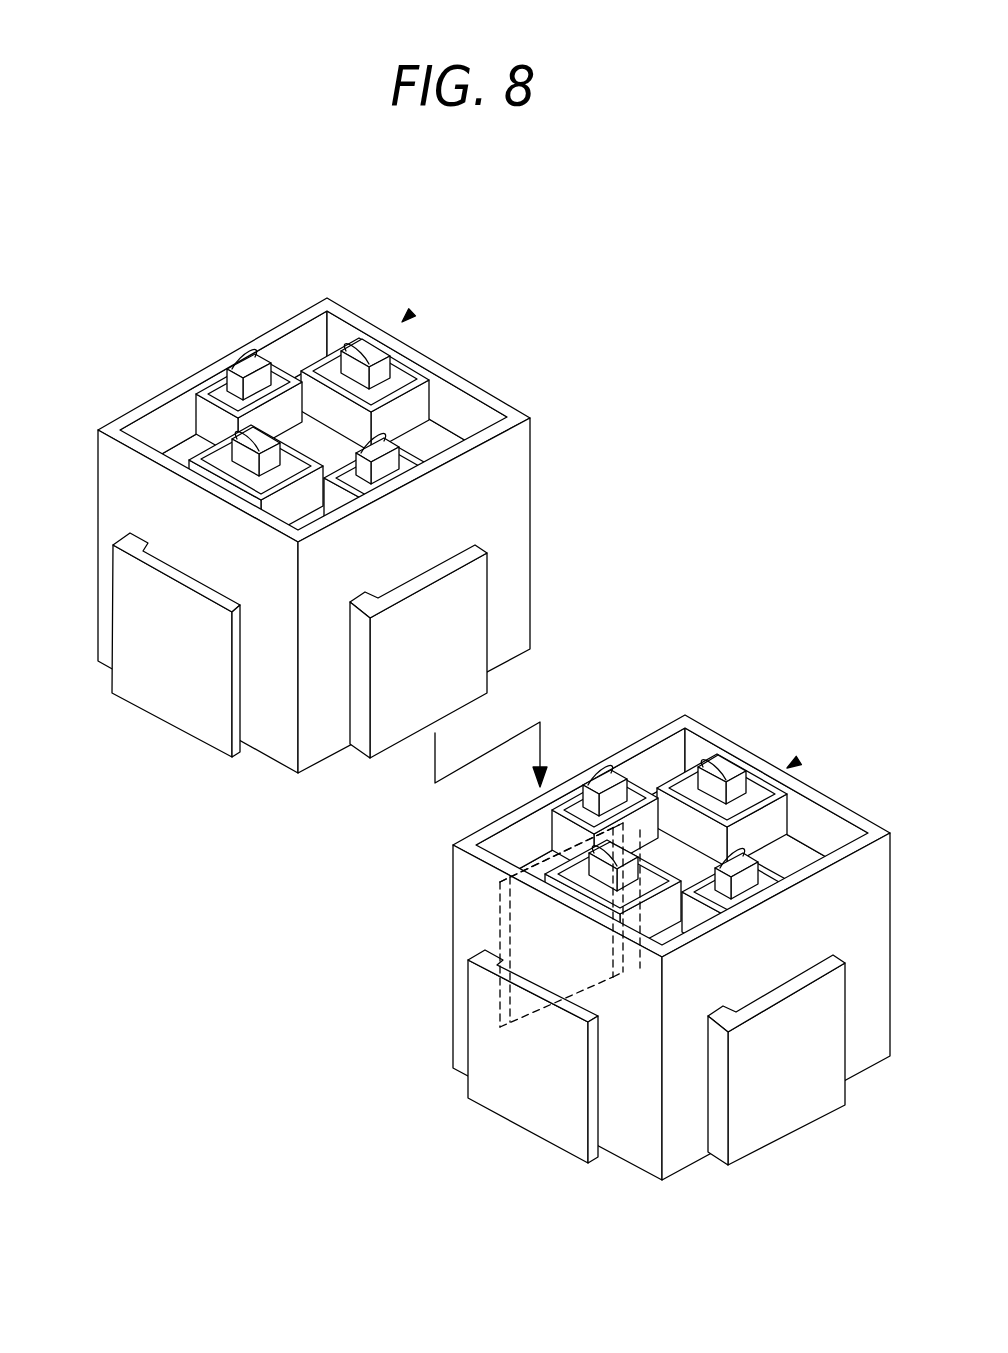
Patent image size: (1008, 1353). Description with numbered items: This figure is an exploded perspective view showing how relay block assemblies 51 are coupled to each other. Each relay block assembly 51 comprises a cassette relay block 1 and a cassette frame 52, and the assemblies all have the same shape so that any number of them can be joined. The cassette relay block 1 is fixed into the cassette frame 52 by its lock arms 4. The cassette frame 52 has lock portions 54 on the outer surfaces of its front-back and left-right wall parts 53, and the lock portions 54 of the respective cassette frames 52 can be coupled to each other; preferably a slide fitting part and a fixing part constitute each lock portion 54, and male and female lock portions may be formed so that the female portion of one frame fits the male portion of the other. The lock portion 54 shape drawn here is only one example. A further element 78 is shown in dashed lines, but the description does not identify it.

The cassette relay block 1 is at (197, 420).
The lock arms 4 is at (320, 363).
The relay block assembly 51 is at (787, 768).
The cassette frame 52 is at (402, 322).
The wall parts 53 is at (147, 397).
The lock portion 54 is at (180, 700).
The hidden plate 78 is at (596, 836).